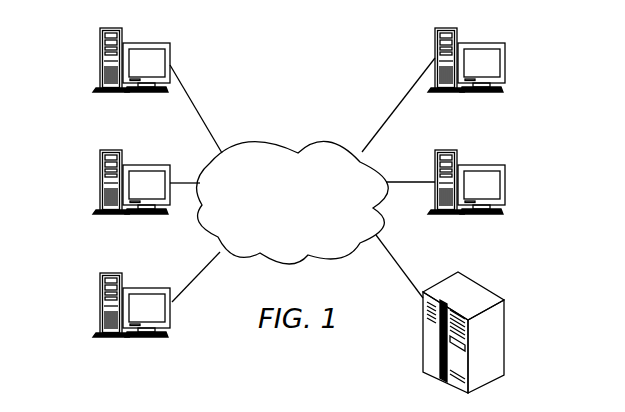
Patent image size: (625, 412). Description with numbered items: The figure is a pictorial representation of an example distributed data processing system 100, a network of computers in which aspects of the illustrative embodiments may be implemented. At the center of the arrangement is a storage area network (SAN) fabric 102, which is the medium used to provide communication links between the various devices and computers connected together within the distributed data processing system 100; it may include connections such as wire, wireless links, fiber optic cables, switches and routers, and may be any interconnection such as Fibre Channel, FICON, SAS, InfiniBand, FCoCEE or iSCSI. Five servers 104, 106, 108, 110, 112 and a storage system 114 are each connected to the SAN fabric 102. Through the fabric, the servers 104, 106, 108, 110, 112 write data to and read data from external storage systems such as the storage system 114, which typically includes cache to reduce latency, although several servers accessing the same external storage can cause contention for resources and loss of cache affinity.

The distributed data processing system 100 is at (351, 78).
The storage area network (SAN) fabric 102 is at (276, 141).
The server 104 is at (100, 60).
The server 106 is at (100, 182).
The server 108 is at (100, 300).
The server 110 is at (505, 61).
The server 112 is at (505, 182).
The storage system 114 is at (504, 318).